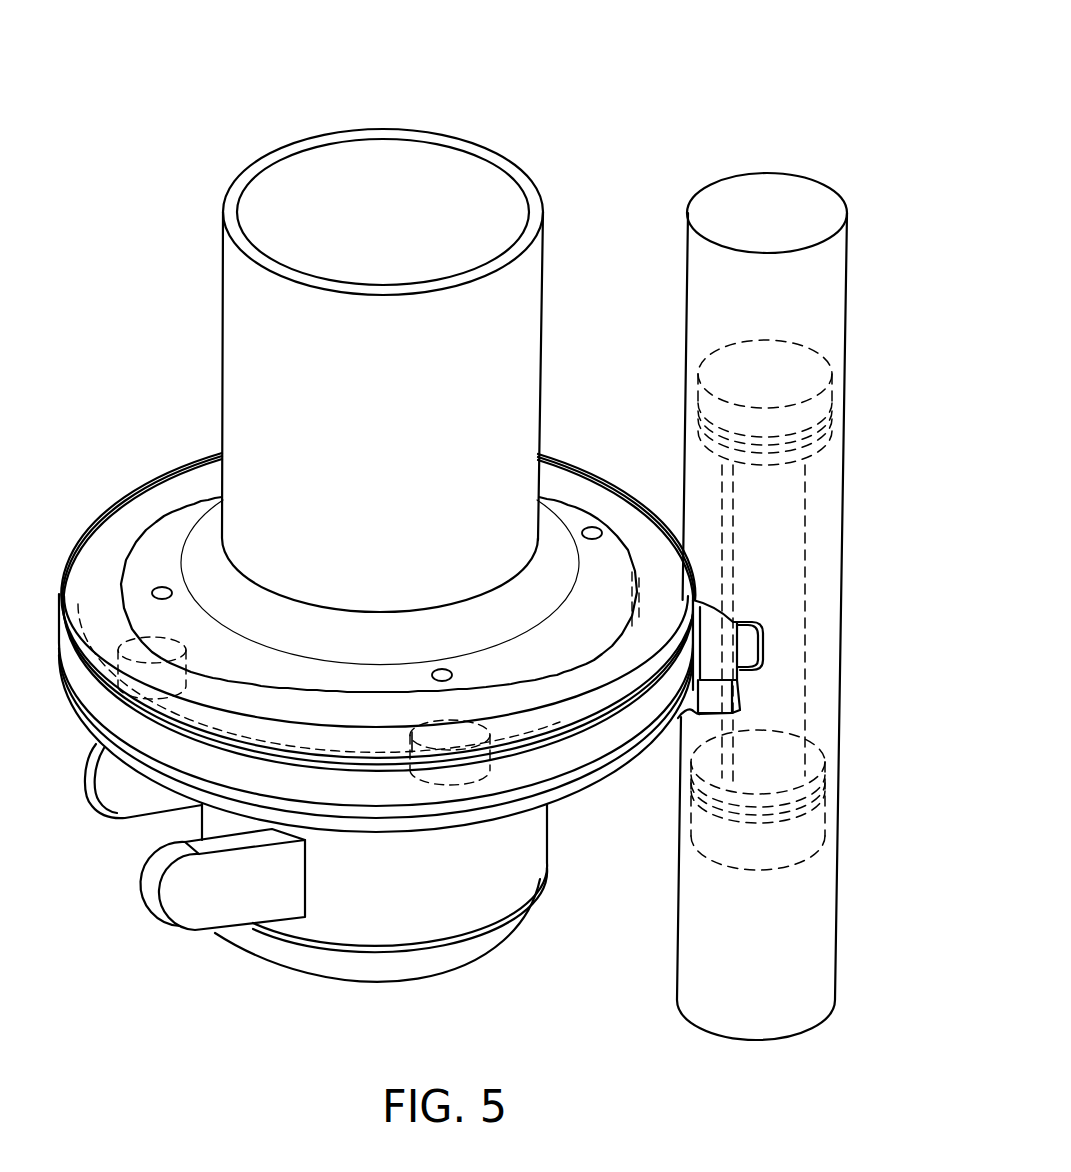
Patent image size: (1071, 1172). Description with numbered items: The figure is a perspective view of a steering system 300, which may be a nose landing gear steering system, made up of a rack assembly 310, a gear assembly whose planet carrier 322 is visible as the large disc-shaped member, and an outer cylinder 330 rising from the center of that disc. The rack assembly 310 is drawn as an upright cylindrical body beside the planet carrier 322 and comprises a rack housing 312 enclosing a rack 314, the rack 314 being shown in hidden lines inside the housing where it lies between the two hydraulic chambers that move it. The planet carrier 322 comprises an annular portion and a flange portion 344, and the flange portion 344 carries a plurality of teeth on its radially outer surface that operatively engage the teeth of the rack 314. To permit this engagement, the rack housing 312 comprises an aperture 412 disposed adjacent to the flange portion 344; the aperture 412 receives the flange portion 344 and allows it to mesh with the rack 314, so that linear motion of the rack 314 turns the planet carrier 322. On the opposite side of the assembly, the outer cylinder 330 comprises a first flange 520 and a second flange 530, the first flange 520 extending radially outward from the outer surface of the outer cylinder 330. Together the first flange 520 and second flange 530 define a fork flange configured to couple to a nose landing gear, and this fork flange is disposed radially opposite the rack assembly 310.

The steering system 300 is at (668, 84).
The rack assembly 310 is at (660, 216).
The rack housing 312 is at (687, 290).
The rack 314 is at (750, 493).
The planet carrier 322 is at (286, 787).
The outer cylinder 330 is at (430, 451).
The flange portion 344 is at (720, 690).
The aperture 412 is at (750, 647).
The first flange 520 is at (115, 797).
The second flange 530 is at (240, 888).